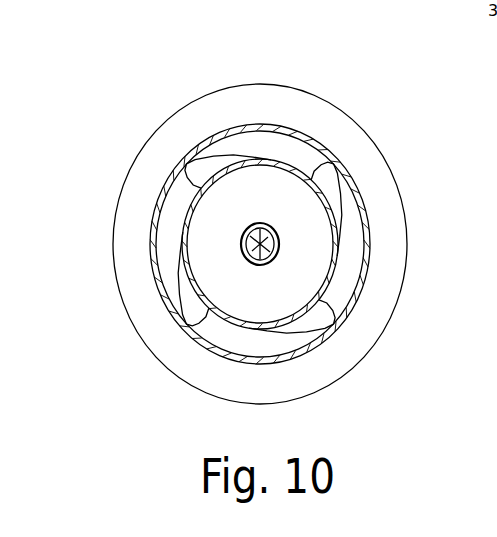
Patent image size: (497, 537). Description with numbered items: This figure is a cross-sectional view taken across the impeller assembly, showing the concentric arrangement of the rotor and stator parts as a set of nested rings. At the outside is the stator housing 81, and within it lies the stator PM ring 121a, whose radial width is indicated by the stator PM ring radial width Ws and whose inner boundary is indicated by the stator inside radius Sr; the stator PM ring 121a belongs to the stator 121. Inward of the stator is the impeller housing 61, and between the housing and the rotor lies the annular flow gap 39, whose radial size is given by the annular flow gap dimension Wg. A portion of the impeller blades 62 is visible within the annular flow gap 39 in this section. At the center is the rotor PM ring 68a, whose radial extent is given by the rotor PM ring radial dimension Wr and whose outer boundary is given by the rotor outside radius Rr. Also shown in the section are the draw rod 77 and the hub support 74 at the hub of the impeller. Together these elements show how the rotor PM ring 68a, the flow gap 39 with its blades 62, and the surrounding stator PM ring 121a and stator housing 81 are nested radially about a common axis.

The housing 121 is at (491, 194).
The stator PM ring 121a is at (384, 227).
The stator housing 81 is at (322, 142).
The impeller housing 61 is at (333, 261).
The impeller blades 62 is at (207, 170).
The rotor PM ring 68a is at (250, 185).
The draw rod 77 is at (280, 253).
The hub support 74 is at (350, 295).
The annular flow gap 39 is at (340, 283).
The stator inside radius Sr is at (262, 243).
The rotor outside radius Rr is at (293, 162).
The stator PM ring radial width Ws is at (157, 209).
The rotor PM ring radial dimension Wr is at (240, 252).
The annular flow gap dimension Wg is at (246, 331).